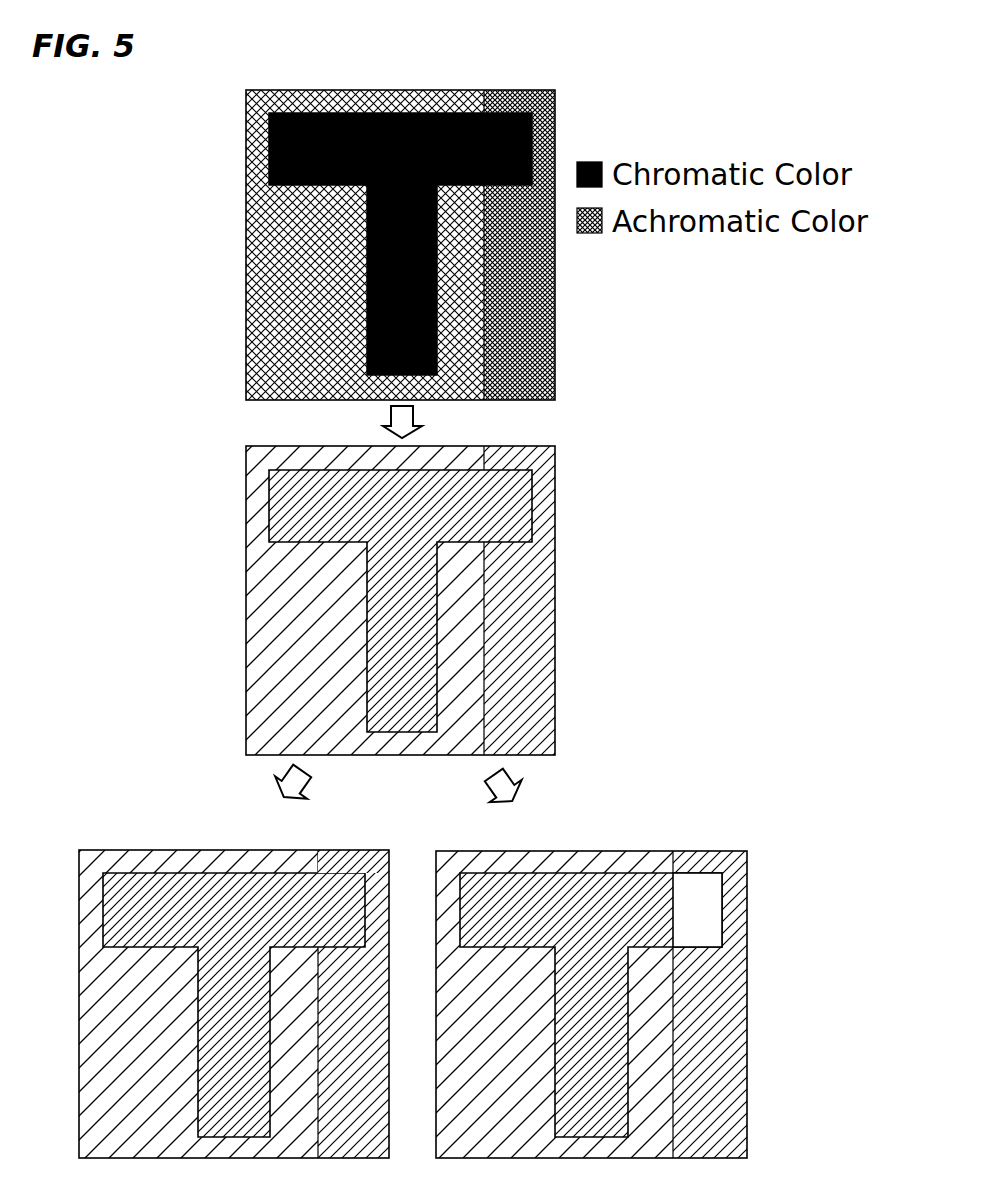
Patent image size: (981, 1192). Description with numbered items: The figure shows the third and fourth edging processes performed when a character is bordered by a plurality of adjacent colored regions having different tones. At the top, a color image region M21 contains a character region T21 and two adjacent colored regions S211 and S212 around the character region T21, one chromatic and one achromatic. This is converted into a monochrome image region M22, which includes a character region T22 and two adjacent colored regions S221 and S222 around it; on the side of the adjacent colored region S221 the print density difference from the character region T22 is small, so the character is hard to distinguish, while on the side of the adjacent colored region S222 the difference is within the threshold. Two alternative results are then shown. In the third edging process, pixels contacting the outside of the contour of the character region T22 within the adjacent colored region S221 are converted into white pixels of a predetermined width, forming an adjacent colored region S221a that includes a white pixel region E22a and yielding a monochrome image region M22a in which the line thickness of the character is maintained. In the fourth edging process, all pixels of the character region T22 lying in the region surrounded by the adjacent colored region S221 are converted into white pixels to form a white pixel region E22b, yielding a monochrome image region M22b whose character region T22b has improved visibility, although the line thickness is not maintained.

The character region T21 is at (442, 112).
The color image region M21 is at (563, 146).
The adjacent colored region S212 is at (246, 323).
The adjacent colored region S211 is at (556, 352).
The character region T22 is at (441, 470).
The monochrome image region M22 is at (563, 505).
The adjacent colored region S222 is at (246, 677).
The adjacent colored region S221 is at (556, 652).
The monochrome image region M22a is at (203, 843).
The white pixel region E22a is at (346, 862).
The adjacent colored region S221a is at (392, 856).
The character region T22b is at (478, 873).
The monochrome image region M22b is at (557, 844).
The white pixel region E22b is at (707, 862).